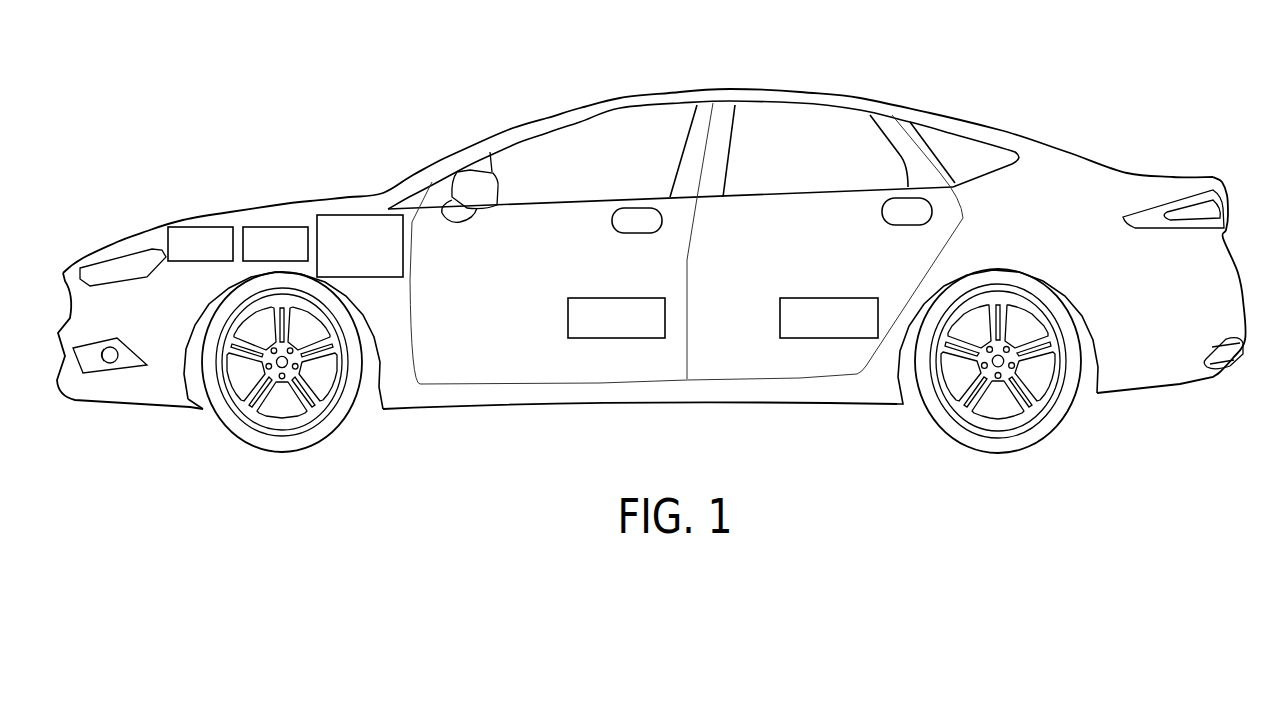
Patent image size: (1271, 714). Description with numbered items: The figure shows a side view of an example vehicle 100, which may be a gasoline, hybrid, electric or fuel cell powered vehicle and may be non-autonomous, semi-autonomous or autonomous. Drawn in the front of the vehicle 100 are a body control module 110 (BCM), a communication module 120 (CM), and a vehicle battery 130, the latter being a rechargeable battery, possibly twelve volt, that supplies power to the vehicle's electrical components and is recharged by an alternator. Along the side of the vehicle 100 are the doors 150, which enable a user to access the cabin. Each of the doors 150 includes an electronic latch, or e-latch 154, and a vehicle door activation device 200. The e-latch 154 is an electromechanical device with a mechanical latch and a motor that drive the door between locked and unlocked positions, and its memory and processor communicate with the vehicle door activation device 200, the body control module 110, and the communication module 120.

The vehicle 100 is at (186, 66).
The body control module 110 is at (277, 227).
The communication module 120 is at (203, 227).
The vehicle battery 130 is at (362, 214).
The doors 150 is at (615, 110).
The electronic latch (e-latch) 154 is at (568, 322).
The vehicle door activation device 200 is at (637, 222).